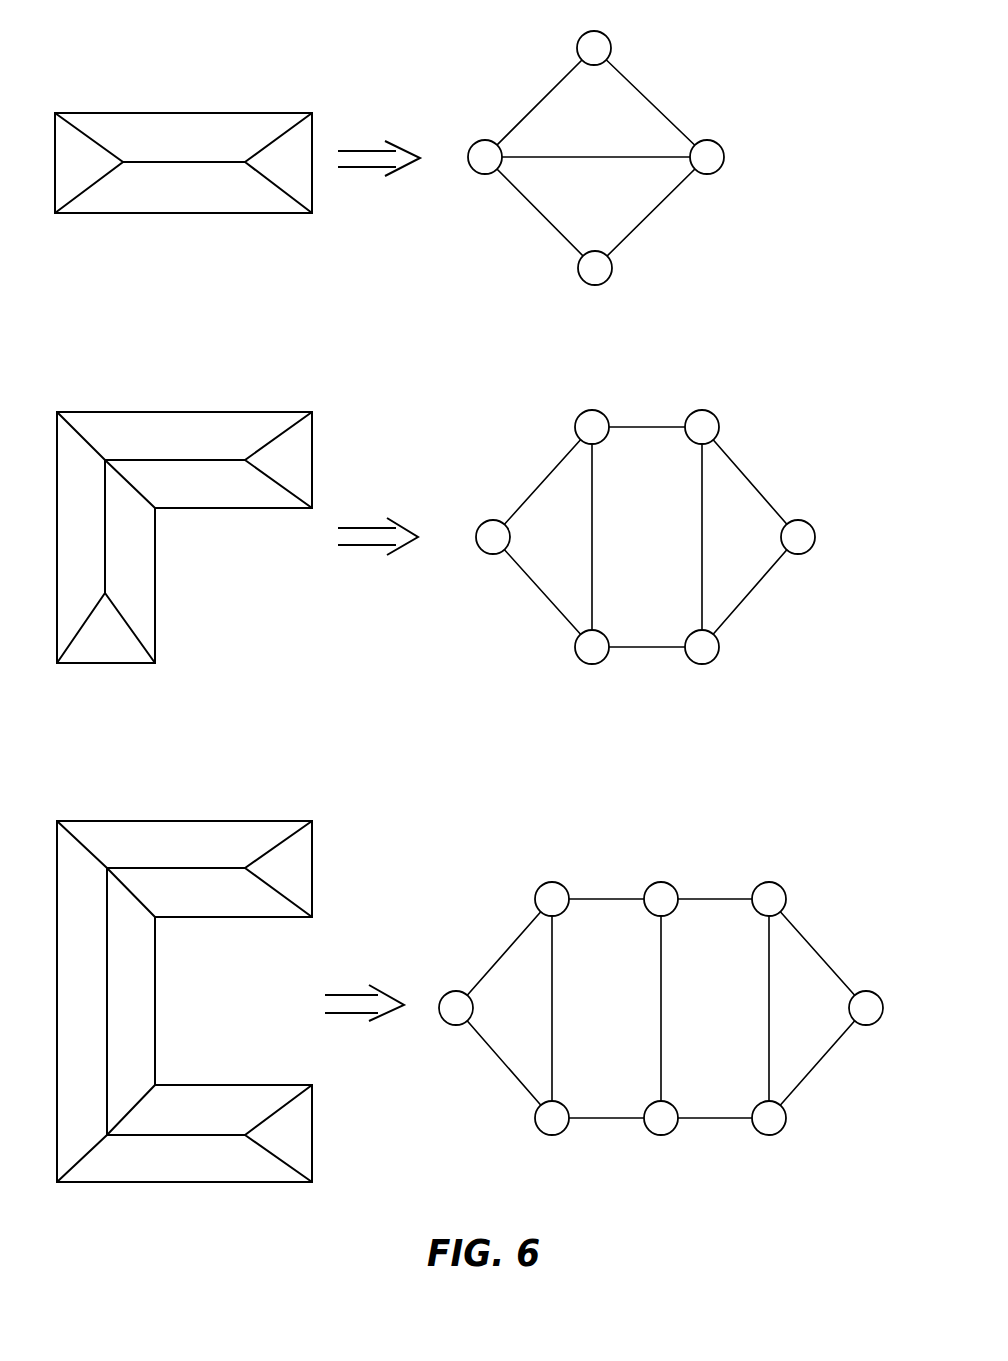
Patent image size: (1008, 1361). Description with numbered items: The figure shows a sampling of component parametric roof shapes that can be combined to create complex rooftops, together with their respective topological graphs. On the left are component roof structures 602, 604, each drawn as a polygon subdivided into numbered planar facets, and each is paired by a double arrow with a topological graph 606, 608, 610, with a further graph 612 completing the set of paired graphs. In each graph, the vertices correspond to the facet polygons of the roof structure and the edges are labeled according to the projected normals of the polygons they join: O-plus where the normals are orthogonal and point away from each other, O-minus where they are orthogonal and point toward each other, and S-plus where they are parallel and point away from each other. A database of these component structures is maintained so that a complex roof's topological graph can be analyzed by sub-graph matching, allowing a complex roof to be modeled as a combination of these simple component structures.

The component roof structure 602 is at (231, 84).
The component roof structure 604 is at (232, 374).
The topological graph 606 is at (232, 791).
The topological graph 608 is at (726, 108).
The topological graph 610 is at (788, 409).
The adjacency graph of polygon 606 612 is at (820, 880).